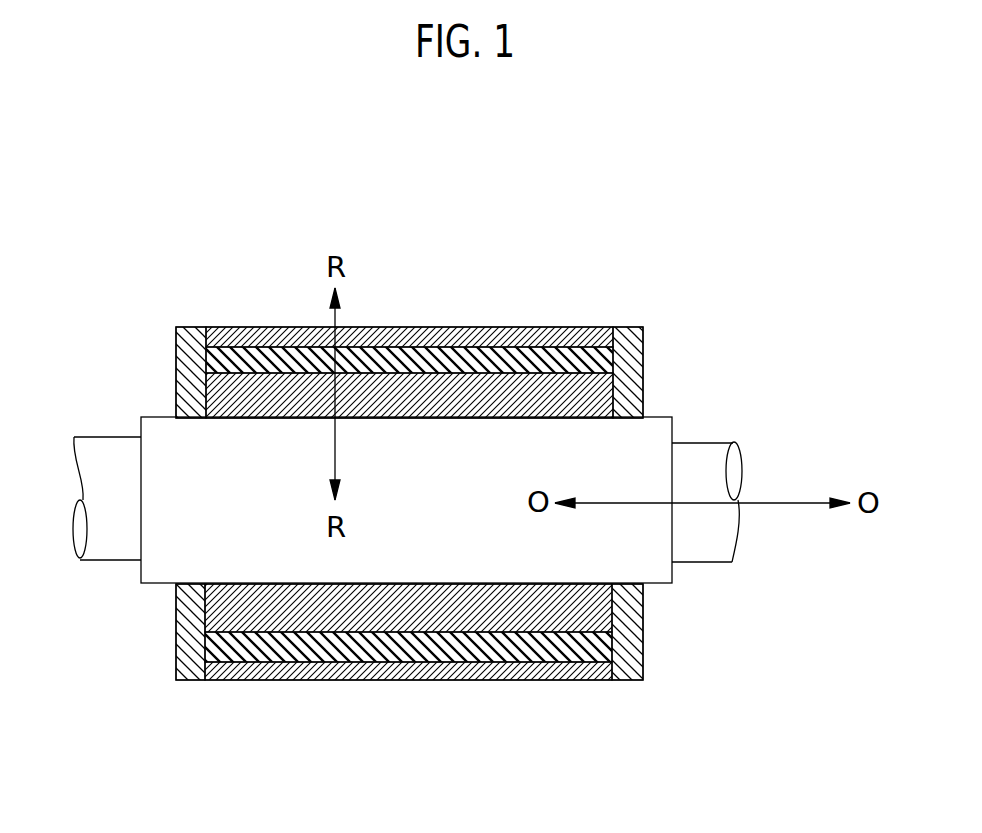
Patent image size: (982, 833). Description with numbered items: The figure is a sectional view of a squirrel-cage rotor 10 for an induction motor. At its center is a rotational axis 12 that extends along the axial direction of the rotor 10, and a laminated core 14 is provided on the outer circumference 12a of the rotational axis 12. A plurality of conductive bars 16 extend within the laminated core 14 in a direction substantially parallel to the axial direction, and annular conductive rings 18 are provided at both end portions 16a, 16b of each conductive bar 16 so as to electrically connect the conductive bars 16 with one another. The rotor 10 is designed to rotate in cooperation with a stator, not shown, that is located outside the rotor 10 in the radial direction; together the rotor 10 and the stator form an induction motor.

The rotor 10 is at (137, 370).
The rotational axis 12 is at (698, 440).
The outer circumference 12a is at (653, 417).
The laminated core 14 is at (540, 397).
The conductive bar 16 is at (390, 357).
The end portion 16a is at (208, 363).
The end portion 16b is at (605, 357).
The annular conductive ring 18 is at (195, 328).